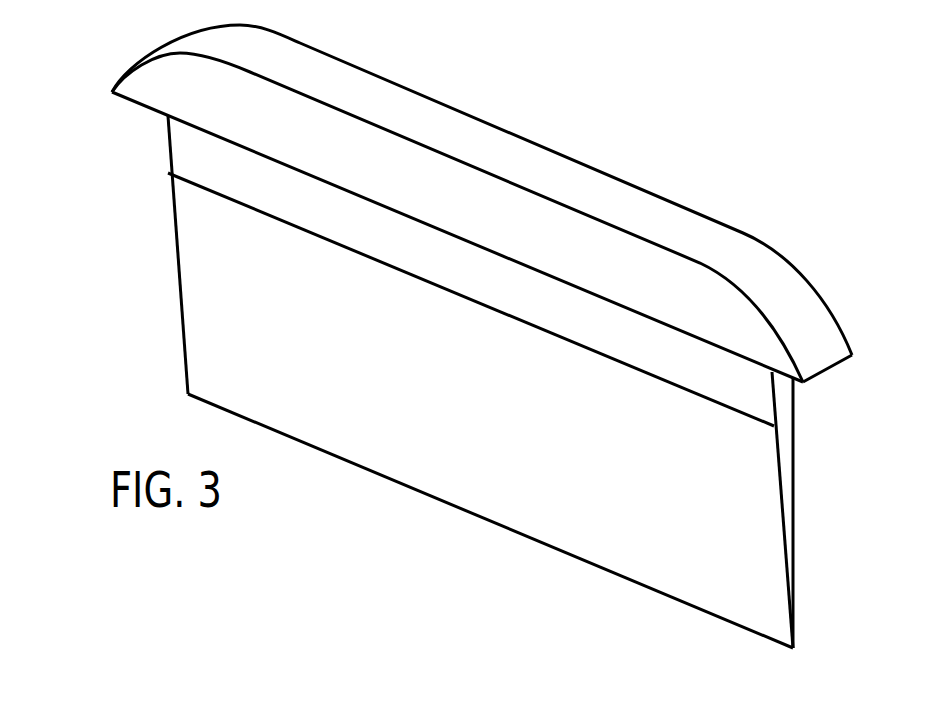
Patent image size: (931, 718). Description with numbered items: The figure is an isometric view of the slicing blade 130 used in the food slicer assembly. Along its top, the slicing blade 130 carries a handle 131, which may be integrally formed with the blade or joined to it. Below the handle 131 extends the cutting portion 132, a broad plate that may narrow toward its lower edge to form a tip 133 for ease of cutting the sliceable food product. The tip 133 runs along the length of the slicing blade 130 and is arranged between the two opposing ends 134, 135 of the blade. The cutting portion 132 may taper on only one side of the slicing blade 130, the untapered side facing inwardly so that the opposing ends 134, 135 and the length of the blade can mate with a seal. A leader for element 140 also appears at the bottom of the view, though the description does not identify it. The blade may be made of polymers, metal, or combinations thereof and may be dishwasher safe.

The slicing blade 130 is at (86, 138).
The handle 131 is at (605, 183).
The cutting portion 132 is at (762, 447).
The tip 133 is at (773, 618).
The opposing end 134 is at (170, 318).
The opposing end 135 is at (806, 541).
The surface 140 is at (222, 717).